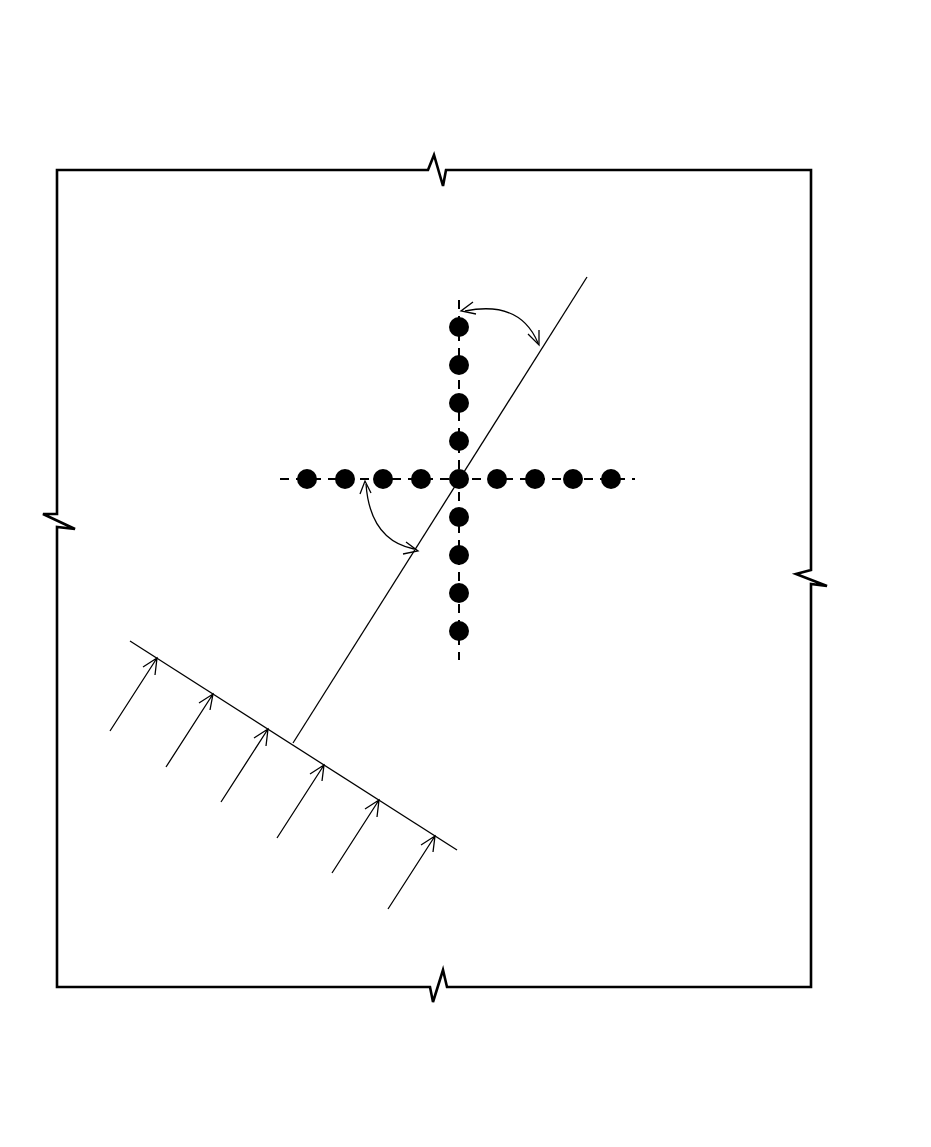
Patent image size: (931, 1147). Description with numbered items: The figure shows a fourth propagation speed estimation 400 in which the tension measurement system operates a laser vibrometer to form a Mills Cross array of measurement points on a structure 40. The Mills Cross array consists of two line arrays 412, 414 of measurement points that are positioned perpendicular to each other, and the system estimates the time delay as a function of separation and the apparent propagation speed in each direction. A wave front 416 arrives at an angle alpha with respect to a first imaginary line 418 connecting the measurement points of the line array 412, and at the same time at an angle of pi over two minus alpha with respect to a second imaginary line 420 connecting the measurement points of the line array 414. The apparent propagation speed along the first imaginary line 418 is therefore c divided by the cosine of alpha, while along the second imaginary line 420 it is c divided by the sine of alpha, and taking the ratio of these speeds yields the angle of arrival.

The fourth propagation speed estimation 400 is at (727, 68).
The structure 40 is at (130, 169).
The line array 412 is at (271, 479).
The line array 414 is at (458, 663).
The wave front 416 is at (178, 670).
The first imaginary line 418 is at (553, 481).
The second imaginary line 420 is at (460, 575).